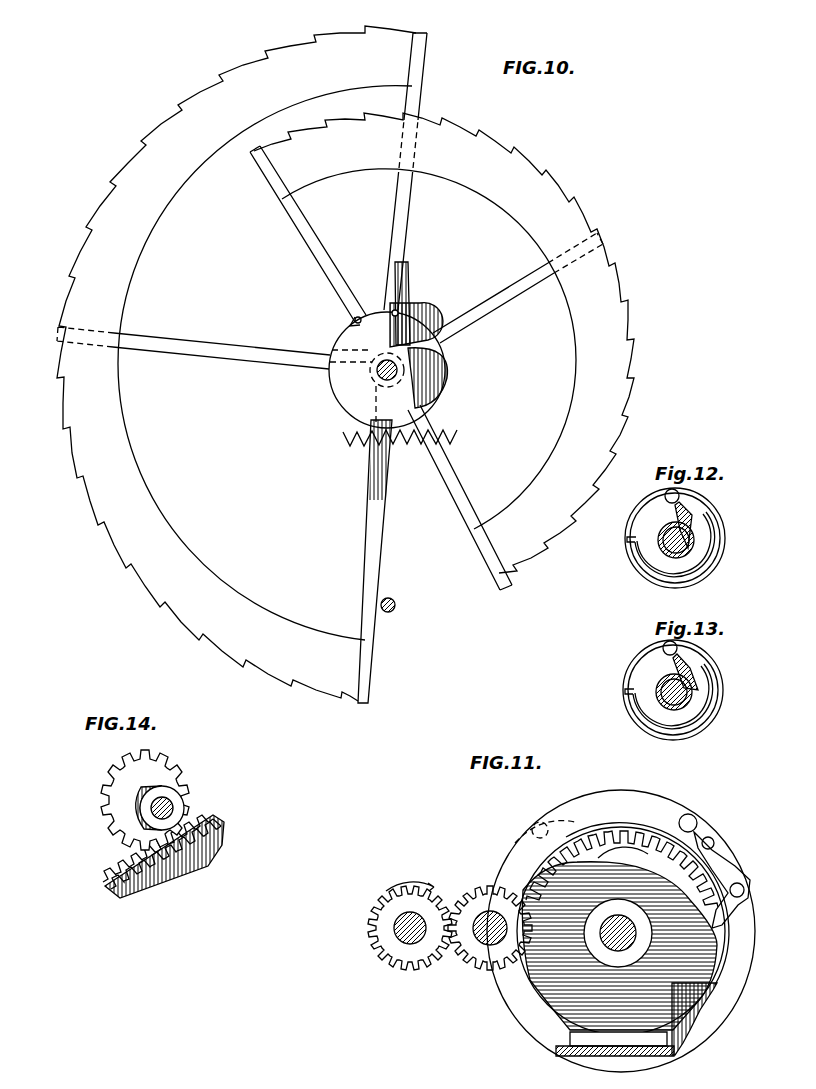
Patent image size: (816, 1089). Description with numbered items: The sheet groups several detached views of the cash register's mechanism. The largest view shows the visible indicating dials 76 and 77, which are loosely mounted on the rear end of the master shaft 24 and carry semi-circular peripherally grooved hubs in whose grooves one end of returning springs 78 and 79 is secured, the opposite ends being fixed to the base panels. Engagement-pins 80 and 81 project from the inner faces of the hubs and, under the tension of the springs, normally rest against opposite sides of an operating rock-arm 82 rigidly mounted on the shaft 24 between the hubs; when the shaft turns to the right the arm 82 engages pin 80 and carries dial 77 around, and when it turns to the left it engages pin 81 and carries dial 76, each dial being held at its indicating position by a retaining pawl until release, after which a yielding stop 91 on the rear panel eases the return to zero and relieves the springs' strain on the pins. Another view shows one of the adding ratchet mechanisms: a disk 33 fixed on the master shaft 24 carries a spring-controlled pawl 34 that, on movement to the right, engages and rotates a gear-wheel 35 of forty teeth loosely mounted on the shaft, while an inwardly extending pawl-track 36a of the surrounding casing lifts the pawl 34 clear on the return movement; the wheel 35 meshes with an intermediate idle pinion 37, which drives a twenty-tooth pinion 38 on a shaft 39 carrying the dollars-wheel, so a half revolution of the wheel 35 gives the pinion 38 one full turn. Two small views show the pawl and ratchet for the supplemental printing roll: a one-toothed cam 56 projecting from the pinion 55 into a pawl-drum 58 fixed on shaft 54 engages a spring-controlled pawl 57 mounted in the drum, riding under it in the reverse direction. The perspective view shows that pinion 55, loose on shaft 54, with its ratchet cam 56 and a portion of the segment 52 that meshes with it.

In FIG. 10, the indicating dial 77 is at (118, 432).
In FIG. 10, the indicating dial 76 is at (582, 366).
In FIG. 10, the returning spring 78 is at (460, 497).
In FIG. 10, the returning spring 79 is at (345, 448).
In FIG. 10, the engagement-pin 80 is at (398, 313).
In FIG. 10, the engagement-pin 81 is at (355, 320).
In FIG. 10, the operating rock-arm 82 is at (367, 312).
In FIG. 10, the master shaft 24 is at (384, 372).
In FIG. 11, the master shaft 24 is at (636, 933).
In FIG. 10, the yielding stop 91 is at (396, 606).
In FIG. 12, the spring-controlled pawl 57 is at (686, 506).
In FIG. 13, the spring-controlled pawl 57 is at (686, 656).
In FIG. 12, the pawl-drum 58 is at (725, 537).
In FIG. 13, the pawl-drum 58 is at (722, 672).
In FIG. 12, the one-toothed cam 56 is at (690, 545).
In FIG. 13, the one-toothed cam 56 is at (692, 694).
In FIG. 14, the one-toothed cam 56 is at (178, 798).
In FIG. 12, the shaft 54 is at (684, 553).
In FIG. 13, the shaft 54 is at (688, 706).
In FIG. 14, the pinion 55 is at (172, 772).
In FIG. 14, the segment 52 is at (104, 883).
In FIG. 11, the disk 33 is at (640, 799).
In FIG. 11, the pawl-track 36a is at (690, 846).
In FIG. 11, the gear-wheel 35 is at (620, 930).
In FIG. 11, the spring-controlled pawl 34 is at (736, 902).
In FIG. 11, the intermediate idle pinion 37 is at (480, 879).
In FIG. 11, the pinion 38 is at (378, 906).
In FIG. 11, the shaft 39 is at (395, 933).